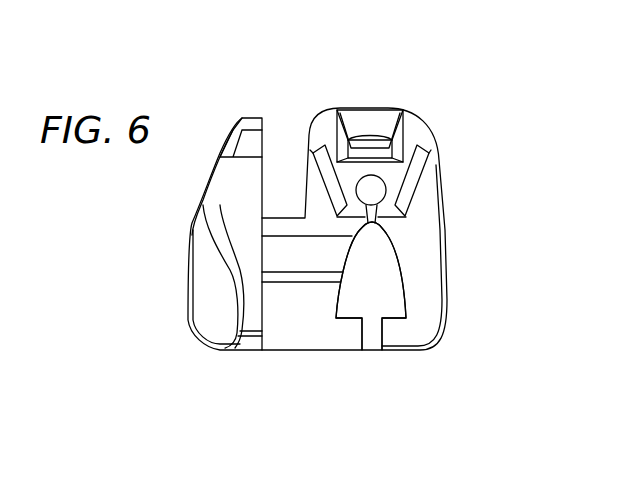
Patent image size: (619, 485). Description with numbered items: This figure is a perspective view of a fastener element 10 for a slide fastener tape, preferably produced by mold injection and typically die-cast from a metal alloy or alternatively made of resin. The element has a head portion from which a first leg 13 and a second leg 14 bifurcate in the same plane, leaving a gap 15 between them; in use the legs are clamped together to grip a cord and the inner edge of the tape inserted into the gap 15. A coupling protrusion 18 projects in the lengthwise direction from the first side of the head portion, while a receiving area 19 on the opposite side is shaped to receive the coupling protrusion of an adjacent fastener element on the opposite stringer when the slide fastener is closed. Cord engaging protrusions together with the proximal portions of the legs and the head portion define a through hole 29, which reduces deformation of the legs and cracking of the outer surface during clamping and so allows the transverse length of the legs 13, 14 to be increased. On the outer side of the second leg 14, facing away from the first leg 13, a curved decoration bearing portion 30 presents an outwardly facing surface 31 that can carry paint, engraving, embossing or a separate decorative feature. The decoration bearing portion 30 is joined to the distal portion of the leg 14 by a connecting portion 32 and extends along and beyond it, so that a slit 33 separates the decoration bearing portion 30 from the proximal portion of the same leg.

The fastener element 10 is at (437, 125).
The first leg 13 is at (428, 277).
The second leg 14 is at (317, 298).
The gap 15 is at (370, 293).
The coupling protrusion 18 is at (367, 138).
The receiving area 19 is at (432, 173).
The through hole 29 is at (376, 201).
The decoration bearing portion 30 is at (225, 285).
The outwardly facing surface 31 is at (188, 263).
The connecting portion 32 is at (280, 258).
The slit 33 is at (283, 153).